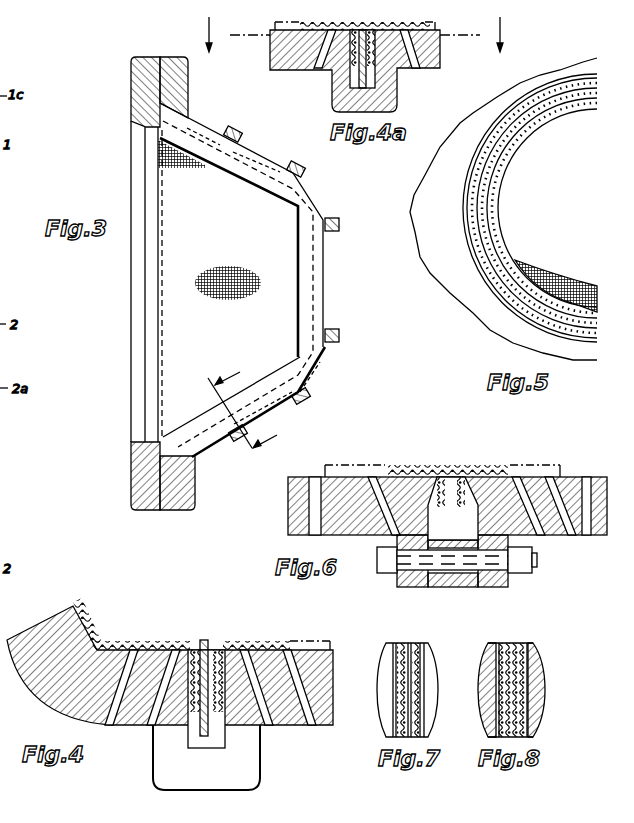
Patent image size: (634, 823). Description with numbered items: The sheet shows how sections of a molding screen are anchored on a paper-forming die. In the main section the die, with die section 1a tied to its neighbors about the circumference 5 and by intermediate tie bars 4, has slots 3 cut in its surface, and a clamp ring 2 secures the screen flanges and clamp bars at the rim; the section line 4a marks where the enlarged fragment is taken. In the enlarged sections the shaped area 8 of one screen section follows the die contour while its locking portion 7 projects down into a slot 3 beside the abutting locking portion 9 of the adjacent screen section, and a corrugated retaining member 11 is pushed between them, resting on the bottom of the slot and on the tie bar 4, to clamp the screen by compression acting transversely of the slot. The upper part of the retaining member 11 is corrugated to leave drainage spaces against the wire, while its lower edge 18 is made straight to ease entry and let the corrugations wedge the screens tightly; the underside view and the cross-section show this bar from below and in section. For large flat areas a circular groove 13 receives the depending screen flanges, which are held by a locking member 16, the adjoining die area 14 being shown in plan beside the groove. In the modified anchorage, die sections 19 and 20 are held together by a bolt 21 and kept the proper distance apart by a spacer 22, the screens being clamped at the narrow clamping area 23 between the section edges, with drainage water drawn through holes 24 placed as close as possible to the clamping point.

In FIG. 4, the die section 1a is at (28, 682).
In FIG. 3, the clamp ring 2 is at (131, 89).
In FIG. 3, the slots 3 is at (292, 370).
In FIG. 4A, the slots 3 is at (378, 58).
In FIG. 4, the slots 3 is at (220, 737).
In FIG. 3, the tie bars 4 is at (293, 162).
In FIG. 4, the tie bars 4 is at (245, 771).
In FIG. 3, the section line 4a— 4a is at (236, 415).
In FIG. 3, the circumference 5 is at (178, 87).
In FIG. 5, the locking portion 7 is at (506, 268).
In FIG. 4, the locking portion 7 is at (150, 646).
In FIG. 4A, the shaped area 8 is at (354, 32).
In FIG. 4, the shaped area 8 is at (88, 620).
In FIG. 5, the locking portion 9 is at (498, 214).
In FIG. 4, the locking portion 9 is at (258, 645).
In FIG. 3, the retaining member 11 is at (288, 195).
In FIG. 4A, the retaining member 11 is at (366, 25).
In FIG. 4, the retaining member 11 is at (207, 648).
In FIG. 8, the retaining member 11 is at (512, 646).
In FIG. 5, the circular groove 13 is at (522, 116).
In FIG. 5, the resilient pad 14 is at (548, 283).
In FIG. 5, the locking member 16 is at (520, 278).
In FIG. 4, the straight lower edge 18 is at (203, 740).
In FIG. 7, the straight lower edge 18 is at (410, 646).
In FIG. 6, the die section 19 is at (338, 490).
In FIG. 6, the die section 20 is at (563, 490).
In FIG. 6, the bolt 21 is at (540, 557).
In FIG. 6, the spacer 22 is at (452, 575).
In FIG. 6, the clamping area 23 is at (453, 468).
In FIG. 4A, the drainage holes 24 is at (320, 60).
In FIG. 6, the drainage holes 24 is at (582, 530).
In FIG. 4, the drainage holes 24 is at (302, 717).